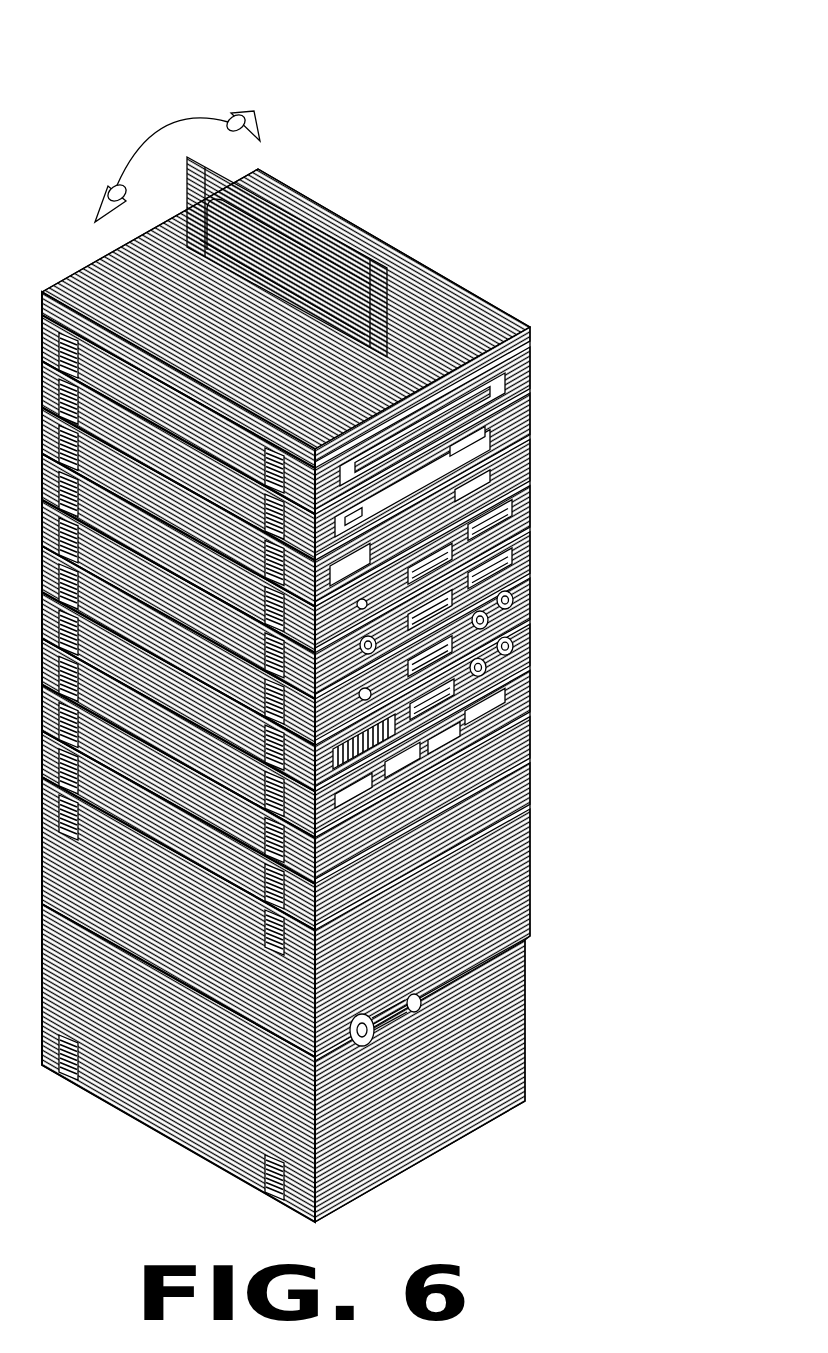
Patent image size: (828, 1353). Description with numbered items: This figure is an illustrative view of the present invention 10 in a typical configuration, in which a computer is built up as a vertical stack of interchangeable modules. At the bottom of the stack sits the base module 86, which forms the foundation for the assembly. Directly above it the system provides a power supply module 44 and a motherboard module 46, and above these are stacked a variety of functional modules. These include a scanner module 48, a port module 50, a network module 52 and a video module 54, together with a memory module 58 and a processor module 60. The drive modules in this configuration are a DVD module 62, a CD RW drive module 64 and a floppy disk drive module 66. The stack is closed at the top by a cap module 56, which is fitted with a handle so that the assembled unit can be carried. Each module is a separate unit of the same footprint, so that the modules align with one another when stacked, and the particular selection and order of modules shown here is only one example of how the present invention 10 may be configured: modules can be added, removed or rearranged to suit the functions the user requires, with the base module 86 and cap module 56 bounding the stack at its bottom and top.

The present invention 10 is at (443, 123).
The cap module 56 is at (422, 262).
The floppy disk drive module 66 is at (533, 375).
The CD RW drive module 64 is at (533, 421).
The DVD module 62 is at (533, 467).
The video module 54 is at (533, 514).
The network module 52 is at (533, 562).
The port module 50 is at (533, 612).
The scanner module 48 is at (533, 660).
The memory module 58 is at (533, 708).
The processor module 60 is at (533, 757).
The motherboard module 46 is at (533, 800).
The power supply module 44 is at (533, 858).
The base module 86 is at (528, 1087).